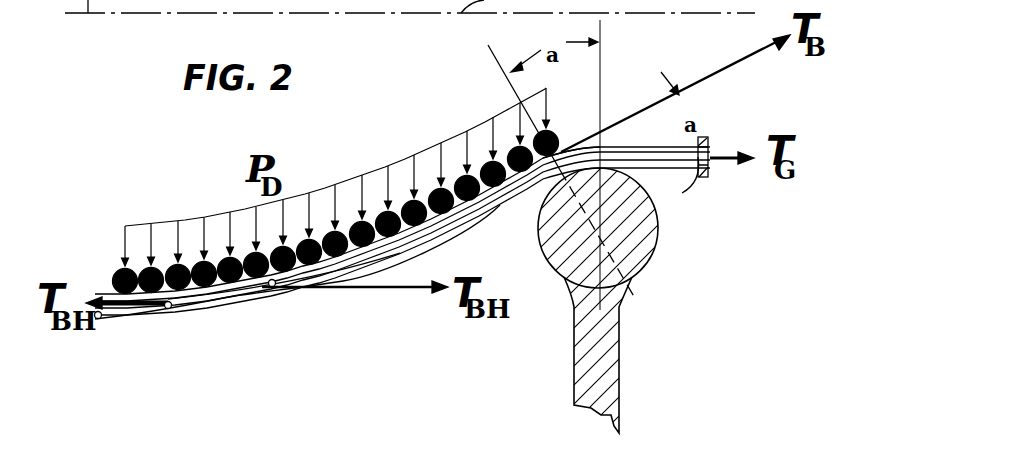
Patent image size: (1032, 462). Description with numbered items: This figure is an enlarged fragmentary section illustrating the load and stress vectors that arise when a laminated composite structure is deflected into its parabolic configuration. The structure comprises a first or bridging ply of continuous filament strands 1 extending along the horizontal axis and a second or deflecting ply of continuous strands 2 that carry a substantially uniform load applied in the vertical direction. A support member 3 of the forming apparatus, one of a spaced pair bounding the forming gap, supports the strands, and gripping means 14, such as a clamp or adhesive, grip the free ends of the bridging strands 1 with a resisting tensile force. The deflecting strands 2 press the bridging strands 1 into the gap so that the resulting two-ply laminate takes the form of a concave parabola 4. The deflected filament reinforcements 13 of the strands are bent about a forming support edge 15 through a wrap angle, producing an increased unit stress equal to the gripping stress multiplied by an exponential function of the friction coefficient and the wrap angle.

The continuous filament strands 1 is at (655, 169).
The continuous strands 2 is at (557, 133).
The support member 3 is at (657, 252).
The concave parabola 4 is at (234, 306).
The filament reinforcements 13 is at (112, 266).
The gripping means 14 is at (708, 172).
The forming support edge 15 is at (586, 150).